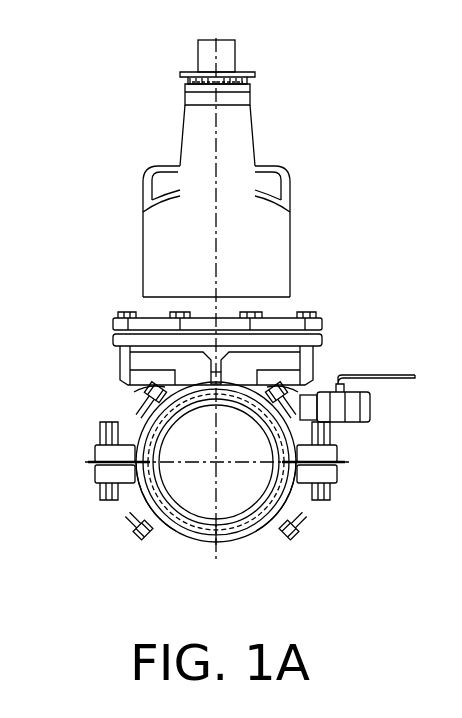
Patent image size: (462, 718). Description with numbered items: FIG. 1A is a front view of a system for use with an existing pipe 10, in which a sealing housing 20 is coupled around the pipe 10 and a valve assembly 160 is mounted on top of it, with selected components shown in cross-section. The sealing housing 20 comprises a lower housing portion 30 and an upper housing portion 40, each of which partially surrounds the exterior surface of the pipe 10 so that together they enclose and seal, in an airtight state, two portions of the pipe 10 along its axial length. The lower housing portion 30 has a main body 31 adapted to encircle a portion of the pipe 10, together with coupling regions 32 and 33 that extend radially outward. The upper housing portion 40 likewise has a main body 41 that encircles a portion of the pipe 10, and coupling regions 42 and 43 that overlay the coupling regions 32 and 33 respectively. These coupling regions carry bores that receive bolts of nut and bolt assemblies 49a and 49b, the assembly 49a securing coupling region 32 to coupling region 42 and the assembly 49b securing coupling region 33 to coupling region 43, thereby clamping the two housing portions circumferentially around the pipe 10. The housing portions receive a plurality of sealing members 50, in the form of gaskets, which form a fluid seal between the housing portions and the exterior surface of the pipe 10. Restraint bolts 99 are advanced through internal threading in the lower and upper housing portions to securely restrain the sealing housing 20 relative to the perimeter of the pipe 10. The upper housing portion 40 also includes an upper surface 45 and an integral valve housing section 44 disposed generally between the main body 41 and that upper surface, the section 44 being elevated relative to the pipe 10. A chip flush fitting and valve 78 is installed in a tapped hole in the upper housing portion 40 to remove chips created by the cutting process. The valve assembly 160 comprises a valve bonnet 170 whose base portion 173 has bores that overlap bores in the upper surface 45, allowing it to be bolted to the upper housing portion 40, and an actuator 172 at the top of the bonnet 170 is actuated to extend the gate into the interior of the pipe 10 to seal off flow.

The existing pipe 10 is at (208, 540).
The sealing housing 20 is at (294, 503).
The lower housing portion 30 is at (135, 500).
The main body 31 is at (180, 529).
The coupling region 32 is at (95, 481).
The coupling region 33 is at (330, 484).
The upper housing portion 40 is at (148, 418).
The main body 41 is at (250, 389).
The coupling region 42 is at (95, 454).
The coupling region 43 is at (337, 459).
The integral valve housing section 44 is at (283, 360).
The upper surface 45 is at (115, 338).
The nut and bolt assembly 49a is at (100, 430).
The nut and bolt assembly 49b is at (345, 426).
The sealing members 50 is at (238, 534).
The chip flush fitting and valve 78 is at (385, 396).
The restraint bolts 99 is at (142, 539).
The valve assembly 160 is at (158, 135).
The valve bonnet 170 is at (240, 128).
The actuator 172 is at (228, 56).
The base portion 173 is at (113, 320).